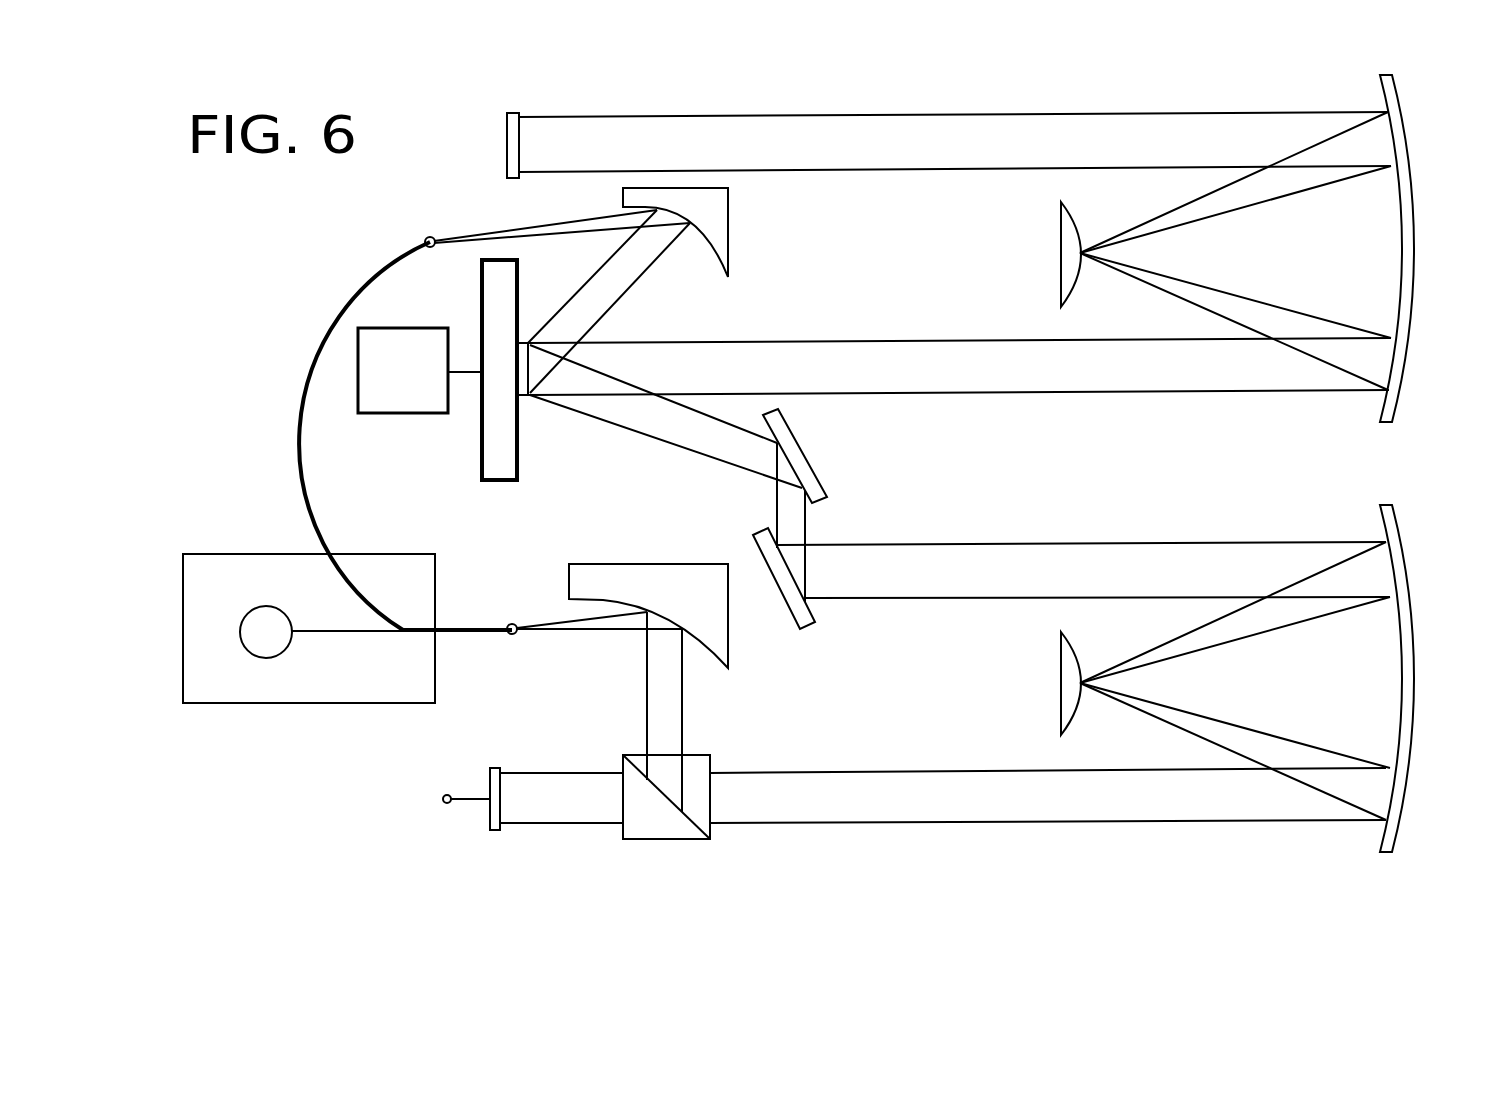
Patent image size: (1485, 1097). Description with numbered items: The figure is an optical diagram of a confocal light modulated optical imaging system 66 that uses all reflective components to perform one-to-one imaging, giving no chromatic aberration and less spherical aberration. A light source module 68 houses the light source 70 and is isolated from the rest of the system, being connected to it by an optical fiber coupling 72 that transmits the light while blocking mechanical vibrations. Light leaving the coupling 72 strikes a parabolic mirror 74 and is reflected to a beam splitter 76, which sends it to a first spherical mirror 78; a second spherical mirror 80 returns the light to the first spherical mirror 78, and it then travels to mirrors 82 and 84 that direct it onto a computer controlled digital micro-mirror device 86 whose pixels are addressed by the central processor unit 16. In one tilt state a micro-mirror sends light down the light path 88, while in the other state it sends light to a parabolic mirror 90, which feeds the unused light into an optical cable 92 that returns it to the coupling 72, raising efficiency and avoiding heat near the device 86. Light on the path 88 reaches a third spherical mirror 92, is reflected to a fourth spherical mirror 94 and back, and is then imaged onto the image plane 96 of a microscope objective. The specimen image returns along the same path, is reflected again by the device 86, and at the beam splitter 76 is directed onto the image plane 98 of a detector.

The central processor unit 16 is at (403, 407).
The confocal light modulated optical imaging system 66 is at (1123, 830).
The light source module 68 is at (309, 660).
The light source 70 is at (260, 644).
The optical fiber coupling 72 is at (465, 635).
The parabolic mirror 74 is at (713, 627).
The beam splitter 76 is at (660, 827).
The first spherical mirror 78 is at (1398, 737).
The second spherical mirror 80 is at (1065, 690).
The mirror 82 is at (803, 615).
The mirror 84 is at (803, 465).
The digital micro-mirror device 86 is at (500, 440).
The light path 88 is at (1005, 375).
The parabolic mirror 90 is at (708, 210).
The optical cable / third spherical mirror 92 is at (350, 303).
The fourth spherical mirror 94 is at (1065, 243).
The image plane 96 is at (513, 112).
The image plane of detector 98 is at (488, 827).